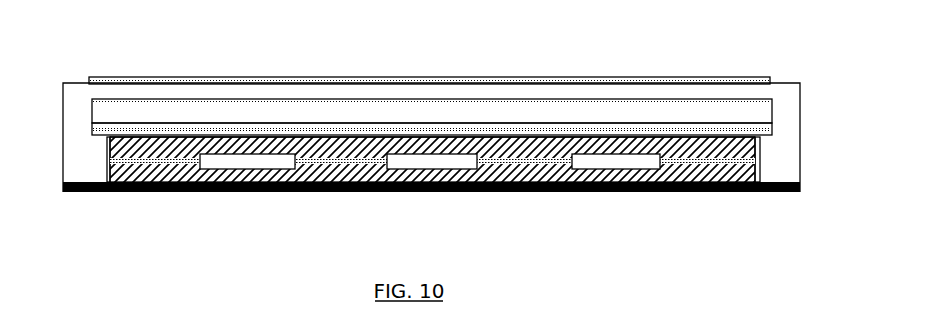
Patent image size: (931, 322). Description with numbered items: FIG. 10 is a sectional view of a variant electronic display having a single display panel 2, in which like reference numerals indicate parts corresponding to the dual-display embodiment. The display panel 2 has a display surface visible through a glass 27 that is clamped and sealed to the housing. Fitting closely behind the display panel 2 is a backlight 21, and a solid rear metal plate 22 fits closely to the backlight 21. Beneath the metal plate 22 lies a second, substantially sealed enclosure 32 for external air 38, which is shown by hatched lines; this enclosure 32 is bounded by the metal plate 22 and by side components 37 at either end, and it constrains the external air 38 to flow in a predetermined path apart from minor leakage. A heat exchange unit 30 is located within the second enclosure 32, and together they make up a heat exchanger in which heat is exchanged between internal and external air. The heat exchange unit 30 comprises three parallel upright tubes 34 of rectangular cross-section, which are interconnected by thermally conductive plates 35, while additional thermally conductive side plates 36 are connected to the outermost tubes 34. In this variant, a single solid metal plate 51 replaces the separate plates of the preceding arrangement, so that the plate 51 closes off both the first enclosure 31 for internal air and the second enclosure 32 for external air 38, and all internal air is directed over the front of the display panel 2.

The display panel 2 is at (595, 110).
The backlight 21 is at (660, 128).
The rear metal plate 22 is at (772, 131).
The glass 27 is at (317, 78).
The heat exchange unit 30 is at (428, 135).
The first enclosure 31 is at (793, 82).
The second enclosure 32 is at (440, 134).
The tube 34 is at (248, 162).
The thermally conductive plate 35 is at (331, 163).
The thermally conductive side plate 36 is at (162, 170).
The side component 37 is at (107, 143).
The external air 38 is at (489, 138).
The solid metal plate 51 is at (404, 192).